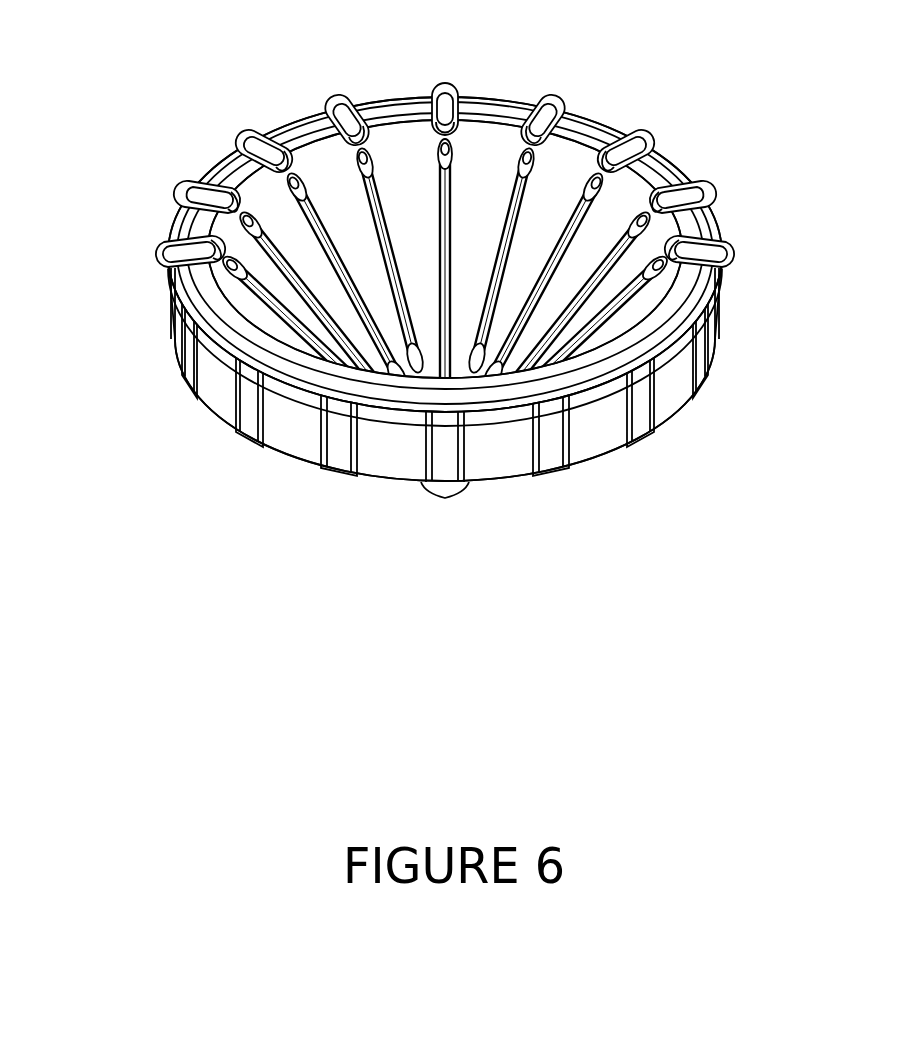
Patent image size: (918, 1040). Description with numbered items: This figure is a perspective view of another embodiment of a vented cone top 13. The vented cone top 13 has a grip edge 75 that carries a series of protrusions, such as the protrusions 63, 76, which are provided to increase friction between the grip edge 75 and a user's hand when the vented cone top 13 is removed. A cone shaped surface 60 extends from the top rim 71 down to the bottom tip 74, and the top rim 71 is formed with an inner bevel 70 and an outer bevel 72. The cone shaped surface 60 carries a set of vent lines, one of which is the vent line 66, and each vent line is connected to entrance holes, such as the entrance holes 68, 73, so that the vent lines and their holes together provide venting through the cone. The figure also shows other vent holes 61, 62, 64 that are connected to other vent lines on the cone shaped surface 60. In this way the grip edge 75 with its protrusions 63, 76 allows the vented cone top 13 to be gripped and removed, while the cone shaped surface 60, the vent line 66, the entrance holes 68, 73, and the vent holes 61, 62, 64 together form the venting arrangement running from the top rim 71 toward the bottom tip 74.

The vented cone top 13 is at (190, 105).
The cone shaped surface 60 is at (323, 160).
The vent hole 61 is at (363, 165).
The vent hole 62 is at (407, 352).
The protrusion 63 is at (443, 92).
The vent hole 64 is at (460, 140).
The vent line 66 is at (517, 180).
The entrance hole 68 is at (548, 158).
The inner bevel 70 is at (645, 160).
The top rim 71 is at (655, 177).
The outer bevel 72 is at (710, 222).
The entrance hole 73 is at (487, 368).
The bottom tip 74 is at (453, 498).
The grip edge 75 is at (385, 480).
The protrusion 76 is at (338, 477).